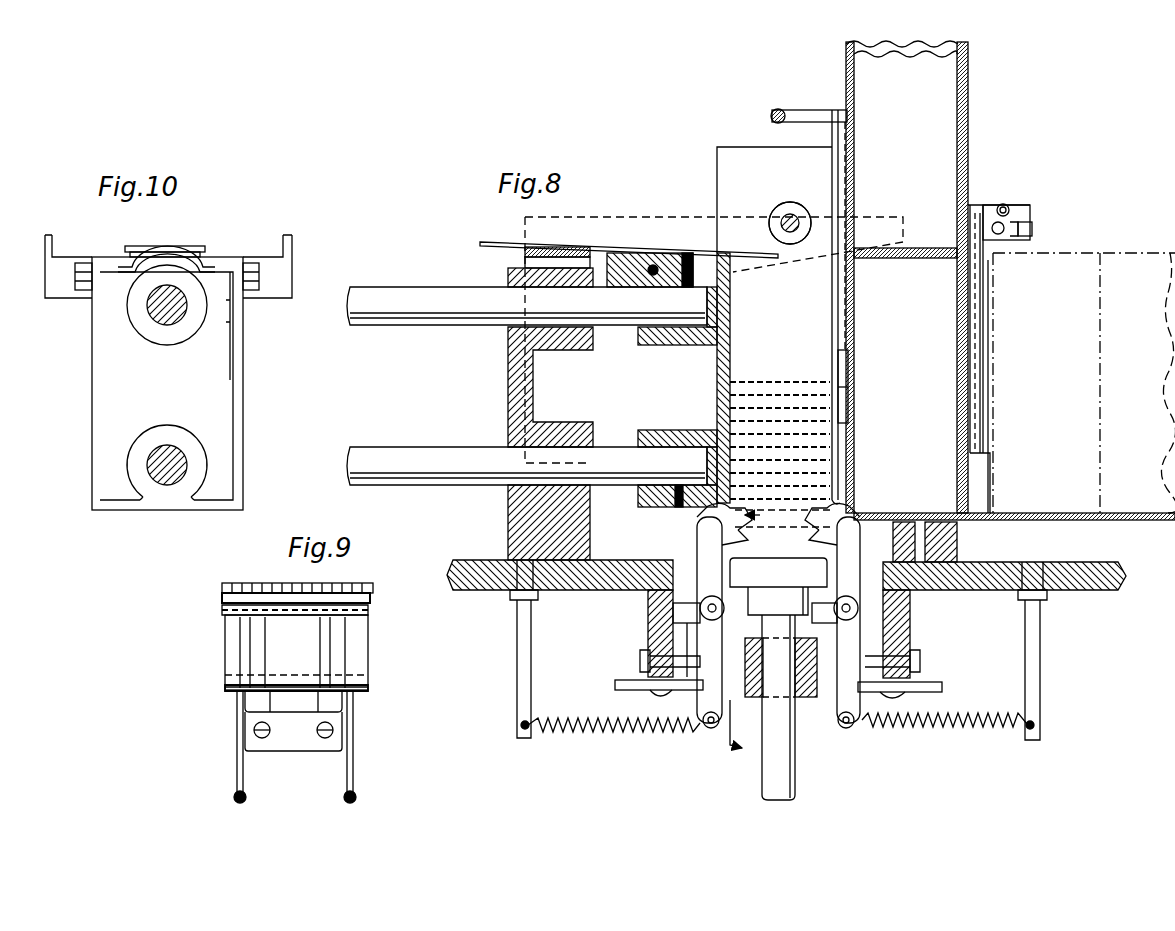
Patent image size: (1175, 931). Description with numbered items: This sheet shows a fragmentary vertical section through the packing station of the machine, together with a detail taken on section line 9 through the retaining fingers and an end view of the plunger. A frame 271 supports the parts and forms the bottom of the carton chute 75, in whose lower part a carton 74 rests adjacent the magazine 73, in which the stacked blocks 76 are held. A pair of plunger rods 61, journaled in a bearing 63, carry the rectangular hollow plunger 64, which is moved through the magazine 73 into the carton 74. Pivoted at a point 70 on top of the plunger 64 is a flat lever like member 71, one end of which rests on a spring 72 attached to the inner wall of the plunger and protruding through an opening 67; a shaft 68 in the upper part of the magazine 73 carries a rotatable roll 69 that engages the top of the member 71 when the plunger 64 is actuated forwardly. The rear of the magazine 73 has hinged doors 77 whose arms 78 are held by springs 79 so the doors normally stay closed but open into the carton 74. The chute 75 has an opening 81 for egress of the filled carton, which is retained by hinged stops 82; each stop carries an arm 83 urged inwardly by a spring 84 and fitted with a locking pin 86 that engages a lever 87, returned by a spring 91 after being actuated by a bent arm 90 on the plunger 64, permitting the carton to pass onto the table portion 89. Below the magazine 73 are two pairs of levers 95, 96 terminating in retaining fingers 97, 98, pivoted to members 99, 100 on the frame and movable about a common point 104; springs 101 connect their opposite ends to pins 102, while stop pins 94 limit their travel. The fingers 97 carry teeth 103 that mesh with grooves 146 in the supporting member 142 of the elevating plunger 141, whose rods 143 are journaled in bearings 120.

In FIG. 8, the section line 9— 9 is at (780, 637).
In FIG. 10, the plunger rods 61 is at (185, 305).
In FIG. 8, the plunger rods 61 is at (372, 325).
In FIG. 8, the bearing 63 is at (508, 276).
In FIG. 10, the plunger 64 is at (92, 393).
In FIG. 8, the plunger 64 is at (678, 357).
In FIG. 10, the opening 67 is at (206, 262).
In FIG. 8, the shaft 68 is at (788, 222).
In FIG. 8, the rotatable roll 69 is at (803, 203).
In FIG. 8, the pivot point 70 is at (653, 265).
In FIG. 10, the flat lever like member 71 is at (195, 246).
In FIG. 8, the flat lever like member 71 is at (600, 242).
In FIG. 10, the spring 72 is at (150, 256).
In FIG. 8, the spring 72 is at (528, 247).
In FIG. 8, the magazine 73 is at (774, 244).
In FIG. 8, the carton 74 is at (1148, 253).
In FIG. 8, the carton chute 75 is at (968, 140).
In FIG. 8, the stacked blocks 76 is at (780, 385).
In FIG. 8, the hinged doors 77 is at (838, 300).
In FIG. 8, the arms 78 is at (800, 112).
In FIG. 8, the spring 79 is at (772, 115).
In FIG. 8, the opening 81 is at (992, 300).
In FIG. 8, the hinged stops 82 is at (978, 333).
In FIG. 8, the arm 83 is at (980, 205).
In FIG. 8, the spring 84 is at (1025, 212).
In FIG. 8, the locking pin 86 is at (1032, 226).
In FIG. 8, the lever 87 is at (1034, 232).
In FIG. 8, the table portion 89 is at (1112, 518).
In FIG. 10, the bent arm 90 is at (52, 232).
In FIG. 8, the bent arm 90 is at (700, 217).
In FIG. 8, the spring 91 is at (1008, 208).
In FIG. 8, the stop pin 94 is at (615, 685).
In FIG. 9, the levers 95 is at (360, 656).
In FIG. 9, the levers 96 is at (338, 641).
In FIG. 8, the levers 96 is at (705, 725).
In FIG. 9, the retaining fingers 97 is at (370, 595).
In FIG. 8, the retaining fingers 97 is at (697, 516).
In FIG. 9, the retaining fingers 98 is at (368, 609).
In FIG. 8, the retaining fingers 98 is at (722, 541).
In FIG. 9, the member 99 is at (295, 740).
In FIG. 8, the member 99 is at (648, 626).
In FIG. 8, the member 100 is at (910, 613).
In FIG. 9, the spring 101 is at (234, 797).
In FIG. 8, the spring 101 is at (580, 733).
In FIG. 8, the pin 102 is at (517, 680).
In FIG. 9, the teeth 103 is at (283, 590).
In FIG. 9, the common point 104 is at (360, 685).
In FIG. 8, the common point 104 is at (673, 608).
In FIG. 8, the bearings 120 is at (810, 700).
In FIG. 8, the elevating plunger 141 is at (808, 770).
In FIG. 8, the supporting member 142 is at (778, 586).
In FIG. 8, the rods 143 is at (766, 790).
In FIG. 8, the grooves 146 is at (700, 560).
In FIG. 8, the frame 271 is at (463, 562).